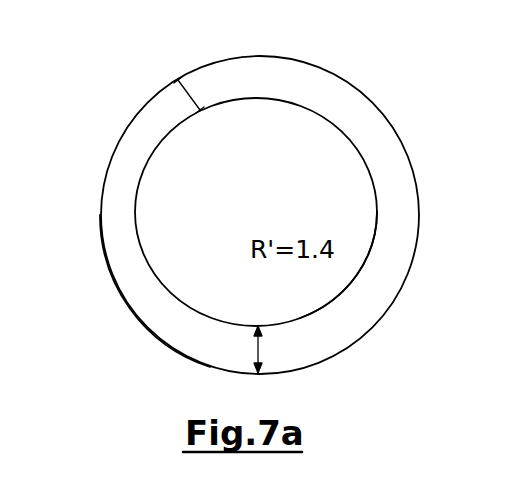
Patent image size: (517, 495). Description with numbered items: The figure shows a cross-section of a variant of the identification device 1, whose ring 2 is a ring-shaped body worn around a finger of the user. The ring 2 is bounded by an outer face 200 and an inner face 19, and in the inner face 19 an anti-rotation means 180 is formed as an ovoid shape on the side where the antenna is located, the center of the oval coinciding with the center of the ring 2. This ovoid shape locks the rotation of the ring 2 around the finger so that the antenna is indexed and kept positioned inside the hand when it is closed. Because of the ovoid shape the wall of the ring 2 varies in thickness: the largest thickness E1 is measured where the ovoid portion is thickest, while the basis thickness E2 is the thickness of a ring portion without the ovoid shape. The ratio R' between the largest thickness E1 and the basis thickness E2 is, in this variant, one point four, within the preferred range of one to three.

The identification device 1 is at (241, 200).
The ring 2 is at (343, 108).
The inner face 19 is at (366, 258).
The anti-rotation means 180 is at (213, 302).
The outer face 200 is at (147, 330).
The largest thickness E1 is at (259, 349).
The basis thickness E2 is at (195, 97).